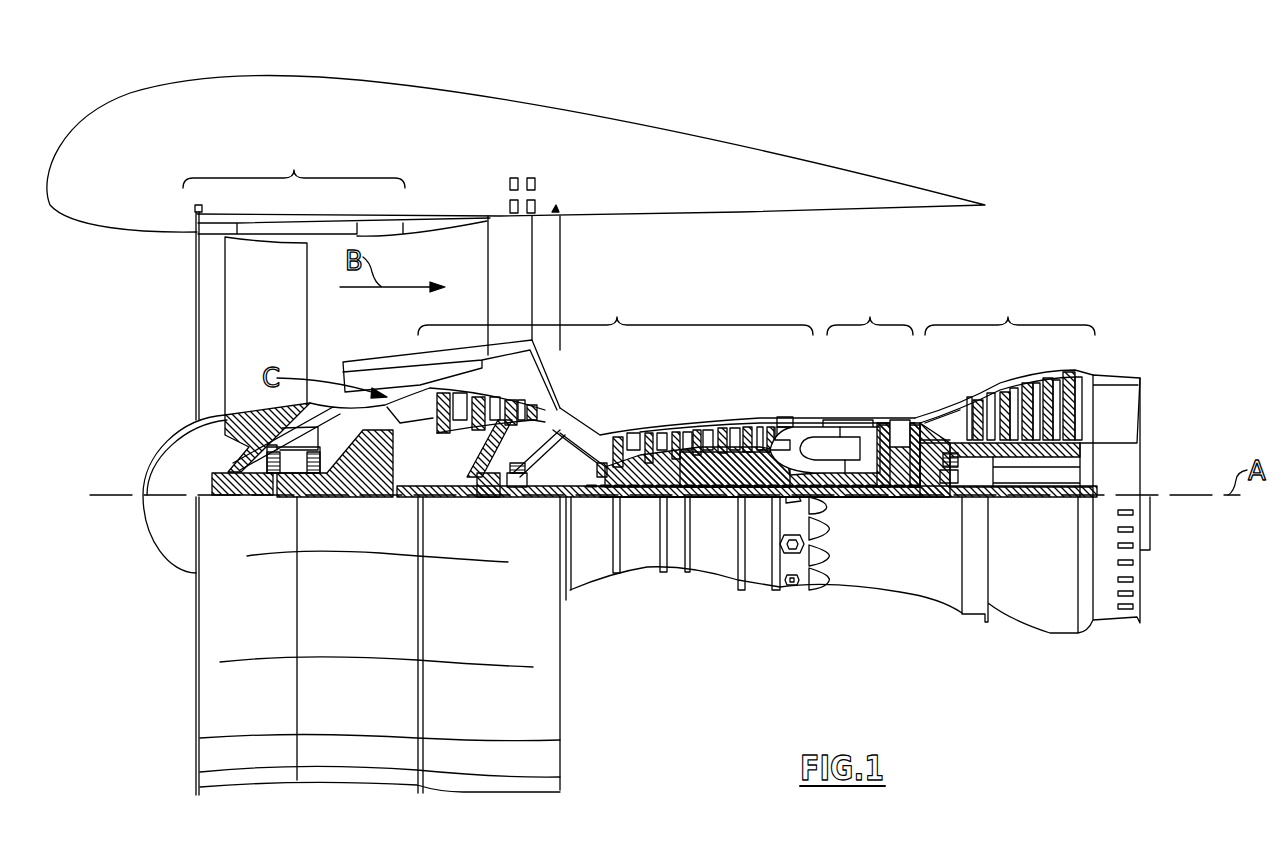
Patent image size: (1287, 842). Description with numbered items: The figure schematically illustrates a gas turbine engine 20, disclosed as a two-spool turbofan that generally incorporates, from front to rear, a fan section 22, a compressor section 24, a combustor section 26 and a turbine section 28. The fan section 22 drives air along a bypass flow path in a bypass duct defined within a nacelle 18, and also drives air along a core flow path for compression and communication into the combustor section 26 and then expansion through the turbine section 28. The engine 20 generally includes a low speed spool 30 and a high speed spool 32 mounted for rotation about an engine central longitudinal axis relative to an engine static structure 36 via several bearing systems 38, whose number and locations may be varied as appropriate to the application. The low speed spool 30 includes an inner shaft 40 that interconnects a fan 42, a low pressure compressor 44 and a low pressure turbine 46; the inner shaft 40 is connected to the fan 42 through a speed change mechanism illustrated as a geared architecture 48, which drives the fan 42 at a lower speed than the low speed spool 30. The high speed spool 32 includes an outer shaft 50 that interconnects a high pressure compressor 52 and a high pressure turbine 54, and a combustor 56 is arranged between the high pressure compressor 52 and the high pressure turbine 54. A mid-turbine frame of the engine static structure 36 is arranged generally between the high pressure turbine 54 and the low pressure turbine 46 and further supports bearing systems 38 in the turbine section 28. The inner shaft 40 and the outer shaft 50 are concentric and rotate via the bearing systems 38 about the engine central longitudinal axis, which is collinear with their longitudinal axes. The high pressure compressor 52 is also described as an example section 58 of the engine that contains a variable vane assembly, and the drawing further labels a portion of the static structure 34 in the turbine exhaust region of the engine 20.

The nacelle 18 is at (513, 133).
The gas turbine engine 20 is at (1006, 139).
The fan section 22 is at (294, 167).
The compressor section 24 is at (615, 310).
The combustor section 26 is at (870, 310).
The turbine section 28 is at (1010, 310).
The low speed spool 30 is at (717, 500).
The high speed spool 32 is at (760, 452).
The turbine exhaust case / static structure 34 is at (1048, 463).
The engine static structure 36 is at (757, 585).
The bearing systems 38 is at (277, 488).
The inner shaft 40 is at (575, 500).
The fan 42 is at (281, 341).
The low pressure compressor 44 is at (493, 402).
The low pressure turbine 46 is at (1025, 377).
The geared architecture 48 is at (385, 480).
The outer shaft 50 is at (837, 473).
The high pressure compressor 52 is at (693, 470).
The high pressure turbine 54 is at (902, 408).
The combustor 56 is at (833, 437).
The section 58 is at (939, 410).